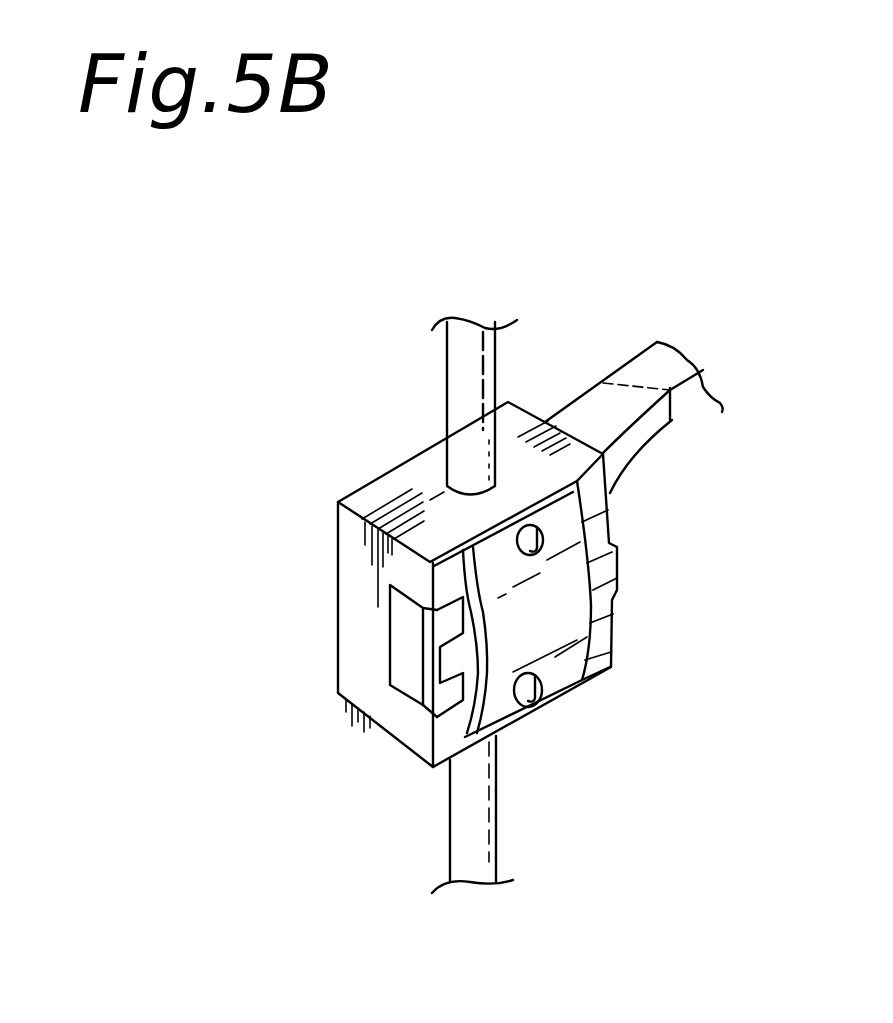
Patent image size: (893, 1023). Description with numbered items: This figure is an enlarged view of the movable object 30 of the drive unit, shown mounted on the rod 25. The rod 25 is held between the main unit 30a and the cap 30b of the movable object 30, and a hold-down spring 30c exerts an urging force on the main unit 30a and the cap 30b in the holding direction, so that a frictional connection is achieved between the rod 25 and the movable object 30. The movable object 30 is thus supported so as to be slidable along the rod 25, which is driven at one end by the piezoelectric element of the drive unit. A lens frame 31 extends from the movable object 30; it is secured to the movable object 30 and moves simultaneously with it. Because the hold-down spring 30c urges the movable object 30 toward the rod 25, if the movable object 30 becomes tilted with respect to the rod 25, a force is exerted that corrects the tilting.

The rod 25 is at (473, 405).
The movable object 30 is at (133, 500).
The main unit 30a is at (363, 683).
The cap 30b is at (407, 657).
The hold-down spring 30c is at (485, 578).
The lens frame 31 is at (652, 421).